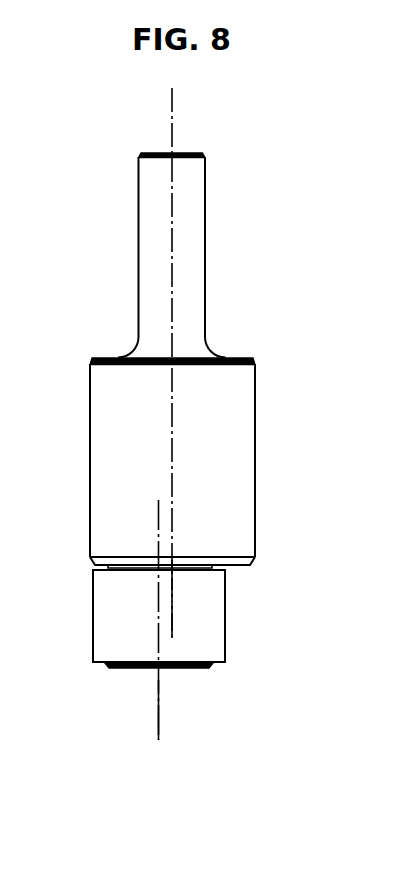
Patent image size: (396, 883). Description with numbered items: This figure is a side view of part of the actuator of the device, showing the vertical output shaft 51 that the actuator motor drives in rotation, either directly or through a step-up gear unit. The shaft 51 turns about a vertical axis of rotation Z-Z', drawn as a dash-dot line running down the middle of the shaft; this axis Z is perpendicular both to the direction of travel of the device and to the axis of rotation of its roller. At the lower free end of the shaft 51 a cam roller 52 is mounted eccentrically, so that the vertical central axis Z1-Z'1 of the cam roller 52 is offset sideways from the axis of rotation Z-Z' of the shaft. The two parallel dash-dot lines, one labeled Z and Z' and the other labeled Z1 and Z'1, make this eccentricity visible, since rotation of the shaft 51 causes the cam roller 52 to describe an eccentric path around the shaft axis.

The axis of rotation Z is at (207, 355).
The output shaft 51 is at (192, 312).
The vertical central axis of cam roller Z1 is at (157, 518).
The cam roller 52 is at (203, 610).
The axis of rotation Z' is at (221, 611).
The vertical central axis of cam roller Z'1 is at (117, 710).